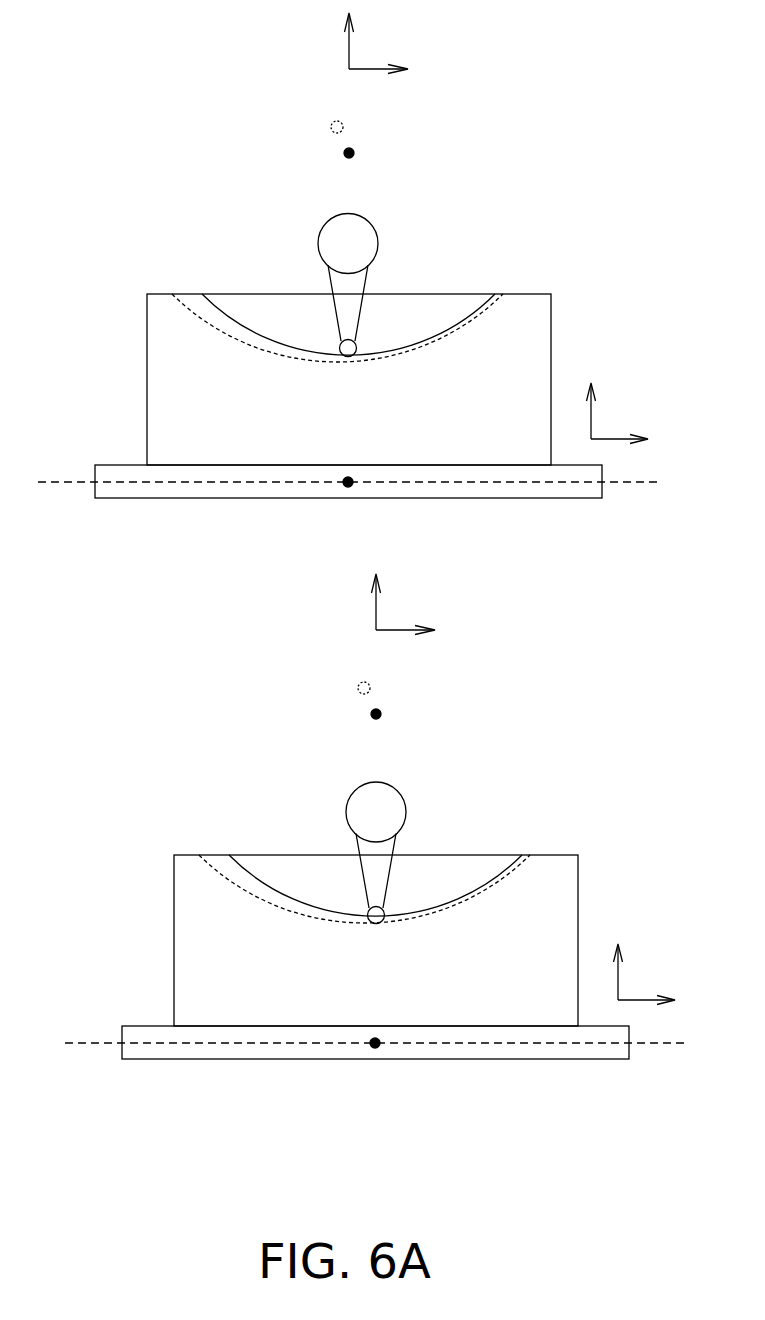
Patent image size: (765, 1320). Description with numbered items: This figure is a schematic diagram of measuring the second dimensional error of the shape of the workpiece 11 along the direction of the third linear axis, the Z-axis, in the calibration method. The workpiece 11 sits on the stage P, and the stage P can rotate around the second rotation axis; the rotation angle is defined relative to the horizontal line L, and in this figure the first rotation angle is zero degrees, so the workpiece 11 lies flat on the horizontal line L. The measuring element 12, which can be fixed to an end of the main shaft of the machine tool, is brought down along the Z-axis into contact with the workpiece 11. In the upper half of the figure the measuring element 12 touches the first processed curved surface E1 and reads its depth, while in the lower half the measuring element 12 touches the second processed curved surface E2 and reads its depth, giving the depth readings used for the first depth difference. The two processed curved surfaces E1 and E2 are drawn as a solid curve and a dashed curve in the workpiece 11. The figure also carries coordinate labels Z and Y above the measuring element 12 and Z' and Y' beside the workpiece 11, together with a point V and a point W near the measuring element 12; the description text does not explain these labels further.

The workpiece 11 is at (162, 323).
The measuring element 12 is at (378, 243).
The first processed curved surface E1 is at (254, 332).
The second processed curved surface E2 is at (210, 323).
The stage P is at (572, 498).
The horizontal line L is at (371, 762).
The virtual point V is at (343, 126).
The reference point W is at (354, 155).
The third linear axis (Z-axis) Z is at (363, 315).
The Y axis Y is at (400, 350).
The Z' axis (rotated) Z' is at (606, 678).
The Y' axis (rotated) Y' is at (645, 721).